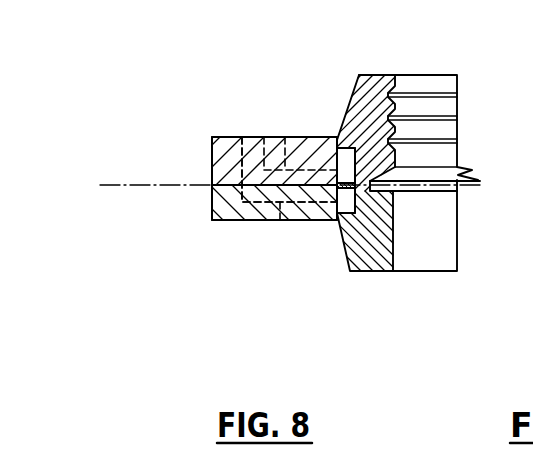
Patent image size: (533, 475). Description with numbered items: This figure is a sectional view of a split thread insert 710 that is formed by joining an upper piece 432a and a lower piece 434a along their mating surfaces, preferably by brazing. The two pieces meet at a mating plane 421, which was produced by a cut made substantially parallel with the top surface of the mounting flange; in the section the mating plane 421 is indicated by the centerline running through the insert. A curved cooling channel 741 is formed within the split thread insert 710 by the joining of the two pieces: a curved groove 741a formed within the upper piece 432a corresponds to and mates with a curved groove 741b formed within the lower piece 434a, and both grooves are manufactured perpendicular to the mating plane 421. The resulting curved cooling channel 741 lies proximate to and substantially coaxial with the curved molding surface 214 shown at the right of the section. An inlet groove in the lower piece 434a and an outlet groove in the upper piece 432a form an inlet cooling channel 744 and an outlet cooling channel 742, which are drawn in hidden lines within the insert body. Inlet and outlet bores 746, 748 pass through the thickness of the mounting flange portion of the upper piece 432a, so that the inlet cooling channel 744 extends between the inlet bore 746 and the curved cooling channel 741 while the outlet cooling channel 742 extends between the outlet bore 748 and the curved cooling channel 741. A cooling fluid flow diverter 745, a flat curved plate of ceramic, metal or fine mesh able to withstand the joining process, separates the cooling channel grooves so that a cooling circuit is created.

The curved molding surface 214 is at (432, 158).
The mating plane 421 is at (118, 187).
The upper piece 432a is at (212, 158).
The lower piece 434a is at (212, 194).
The split thread insert 710 is at (181, 97).
The curved cooling channel 741 is at (351, 147).
The curved groove 741a is at (341, 147).
The curved groove 741b is at (345, 215).
The outlet cooling channel 742 is at (273, 137).
The inlet cooling channel 744 is at (281, 221).
The cooling fluid flow diverter 745 is at (357, 195).
The inlet bore 746 is at (221, 137).
The outlet bore 748 is at (221, 137).